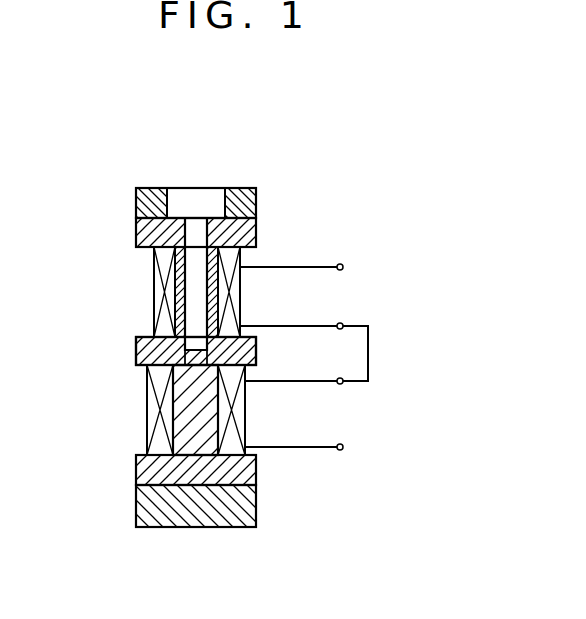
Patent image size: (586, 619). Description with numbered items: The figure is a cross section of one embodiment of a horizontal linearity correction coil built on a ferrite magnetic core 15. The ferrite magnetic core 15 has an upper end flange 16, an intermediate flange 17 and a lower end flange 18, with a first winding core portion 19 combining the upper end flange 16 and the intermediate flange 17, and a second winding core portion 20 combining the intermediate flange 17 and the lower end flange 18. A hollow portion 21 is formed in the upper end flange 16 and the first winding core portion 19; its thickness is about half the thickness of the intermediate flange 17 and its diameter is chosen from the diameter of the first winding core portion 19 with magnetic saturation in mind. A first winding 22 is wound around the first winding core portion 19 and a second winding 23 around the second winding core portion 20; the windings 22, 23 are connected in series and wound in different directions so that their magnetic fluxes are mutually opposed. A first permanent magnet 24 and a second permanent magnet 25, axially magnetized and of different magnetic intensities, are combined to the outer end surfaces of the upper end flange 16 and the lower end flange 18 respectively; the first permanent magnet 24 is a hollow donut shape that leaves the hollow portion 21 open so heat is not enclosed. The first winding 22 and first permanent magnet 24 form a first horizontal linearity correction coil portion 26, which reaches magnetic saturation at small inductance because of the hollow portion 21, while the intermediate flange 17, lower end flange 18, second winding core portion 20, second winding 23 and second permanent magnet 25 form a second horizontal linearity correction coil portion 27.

The ferrite magnetic core 15 is at (131, 352).
The upper end flange 16 is at (257, 227).
The intermediate flange 17 is at (257, 350).
The lower end flange 18 is at (145, 465).
The first winding core portion 19 is at (216, 294).
The second winding core portion 20 is at (208, 382).
The hollow portion 21 is at (203, 232).
The first winding 22 is at (230, 322).
The second winding 23 is at (227, 438).
The first permanent magnet 24 is at (131, 200).
The second permanent magnet 25 is at (208, 527).
The first horizontal linearity correction coil portion 26 is at (149, 290).
The second horizontal linearity correction coil portion 27 is at (138, 407).